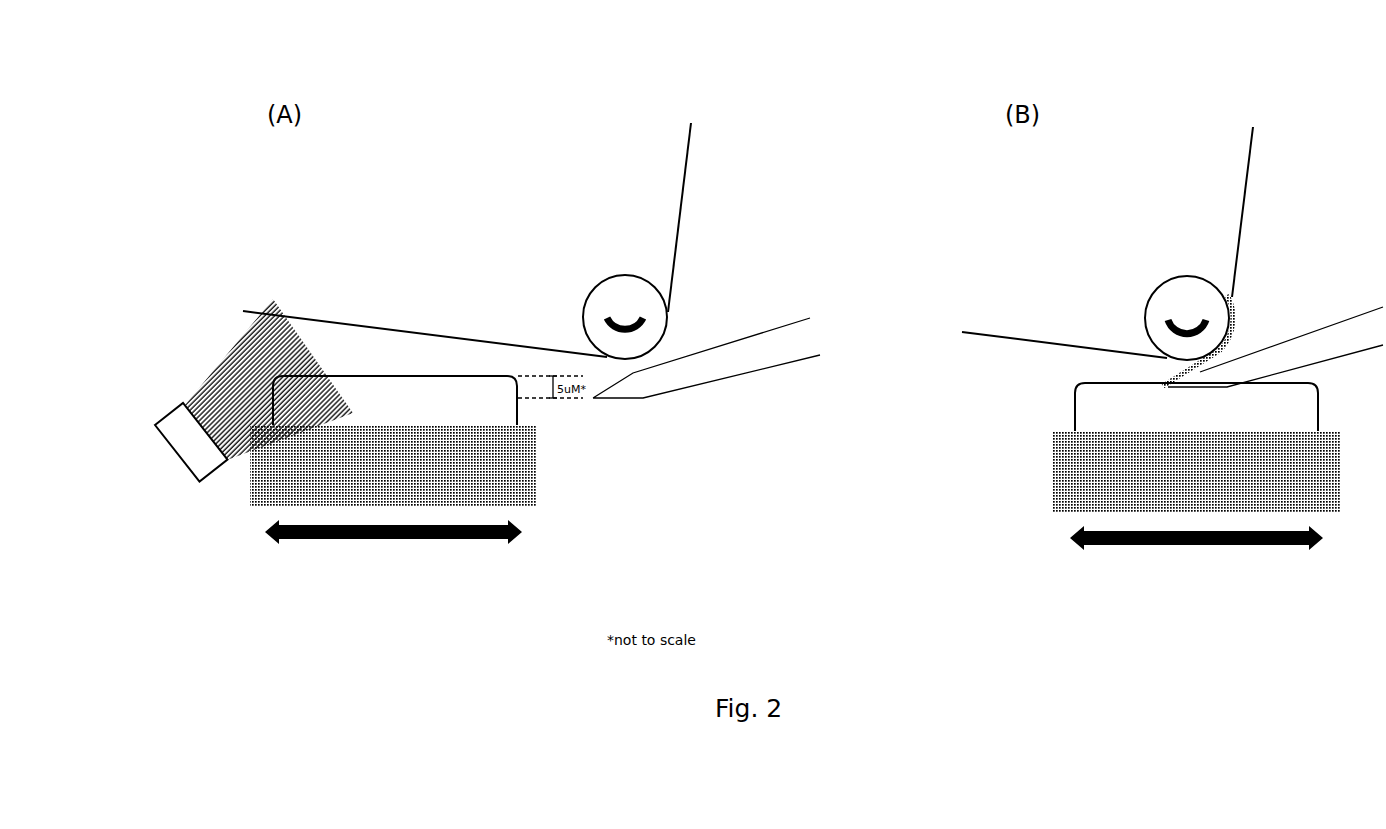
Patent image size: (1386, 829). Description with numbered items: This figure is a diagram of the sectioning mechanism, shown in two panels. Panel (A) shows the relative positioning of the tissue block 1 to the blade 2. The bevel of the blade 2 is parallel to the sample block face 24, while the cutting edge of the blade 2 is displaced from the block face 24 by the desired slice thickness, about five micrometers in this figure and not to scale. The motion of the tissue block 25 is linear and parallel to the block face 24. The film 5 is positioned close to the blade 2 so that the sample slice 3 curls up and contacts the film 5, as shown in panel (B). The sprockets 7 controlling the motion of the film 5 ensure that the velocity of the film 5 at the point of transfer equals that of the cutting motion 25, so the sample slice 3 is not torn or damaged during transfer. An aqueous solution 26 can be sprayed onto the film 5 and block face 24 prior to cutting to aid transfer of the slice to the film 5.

The tissue block 1 is at (234, 506).
The blade 2 is at (693, 416).
The sample slice 3 is at (1258, 307).
The film 5 is at (425, 301).
The sprockets 7 is at (1160, 248).
The sample block face 24 is at (367, 352).
The motion of the tissue block 25 is at (440, 562).
The aqueous solution 26 is at (176, 364).